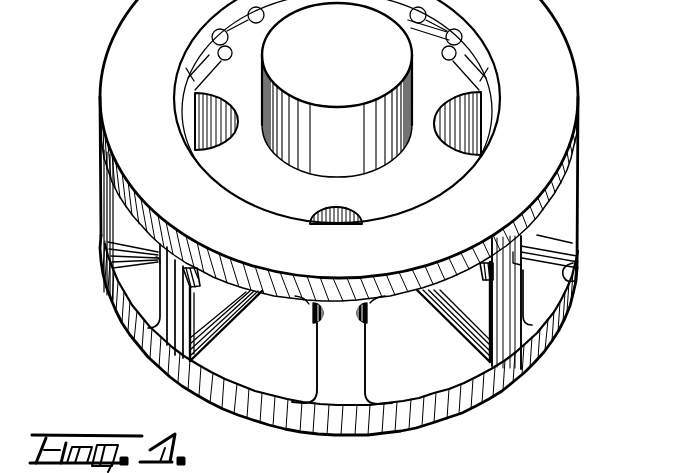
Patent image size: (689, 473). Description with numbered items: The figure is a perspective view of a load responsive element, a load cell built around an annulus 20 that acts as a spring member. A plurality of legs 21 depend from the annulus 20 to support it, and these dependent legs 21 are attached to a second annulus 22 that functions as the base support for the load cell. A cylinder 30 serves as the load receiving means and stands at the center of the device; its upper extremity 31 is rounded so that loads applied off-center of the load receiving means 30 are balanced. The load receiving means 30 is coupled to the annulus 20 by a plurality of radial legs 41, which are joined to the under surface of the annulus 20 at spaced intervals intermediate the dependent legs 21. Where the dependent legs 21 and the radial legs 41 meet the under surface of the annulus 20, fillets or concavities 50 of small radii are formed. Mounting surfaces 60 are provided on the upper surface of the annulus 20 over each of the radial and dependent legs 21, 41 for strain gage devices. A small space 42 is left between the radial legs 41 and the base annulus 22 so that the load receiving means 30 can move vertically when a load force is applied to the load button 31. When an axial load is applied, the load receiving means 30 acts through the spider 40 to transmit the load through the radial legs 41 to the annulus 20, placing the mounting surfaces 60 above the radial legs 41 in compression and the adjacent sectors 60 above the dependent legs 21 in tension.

The annulus 20 is at (562, 183).
The legs 21 is at (132, 238).
The second annulus 22 is at (572, 267).
The cylinder 30 is at (259, 93).
The upper extremity 31 is at (341, 53).
The spider 40 is at (422, 183).
The radial legs 41 is at (157, 290).
The small space 42 is at (178, 353).
The fillets 50 is at (198, 281).
The mounting surfaces 60 is at (382, 258).